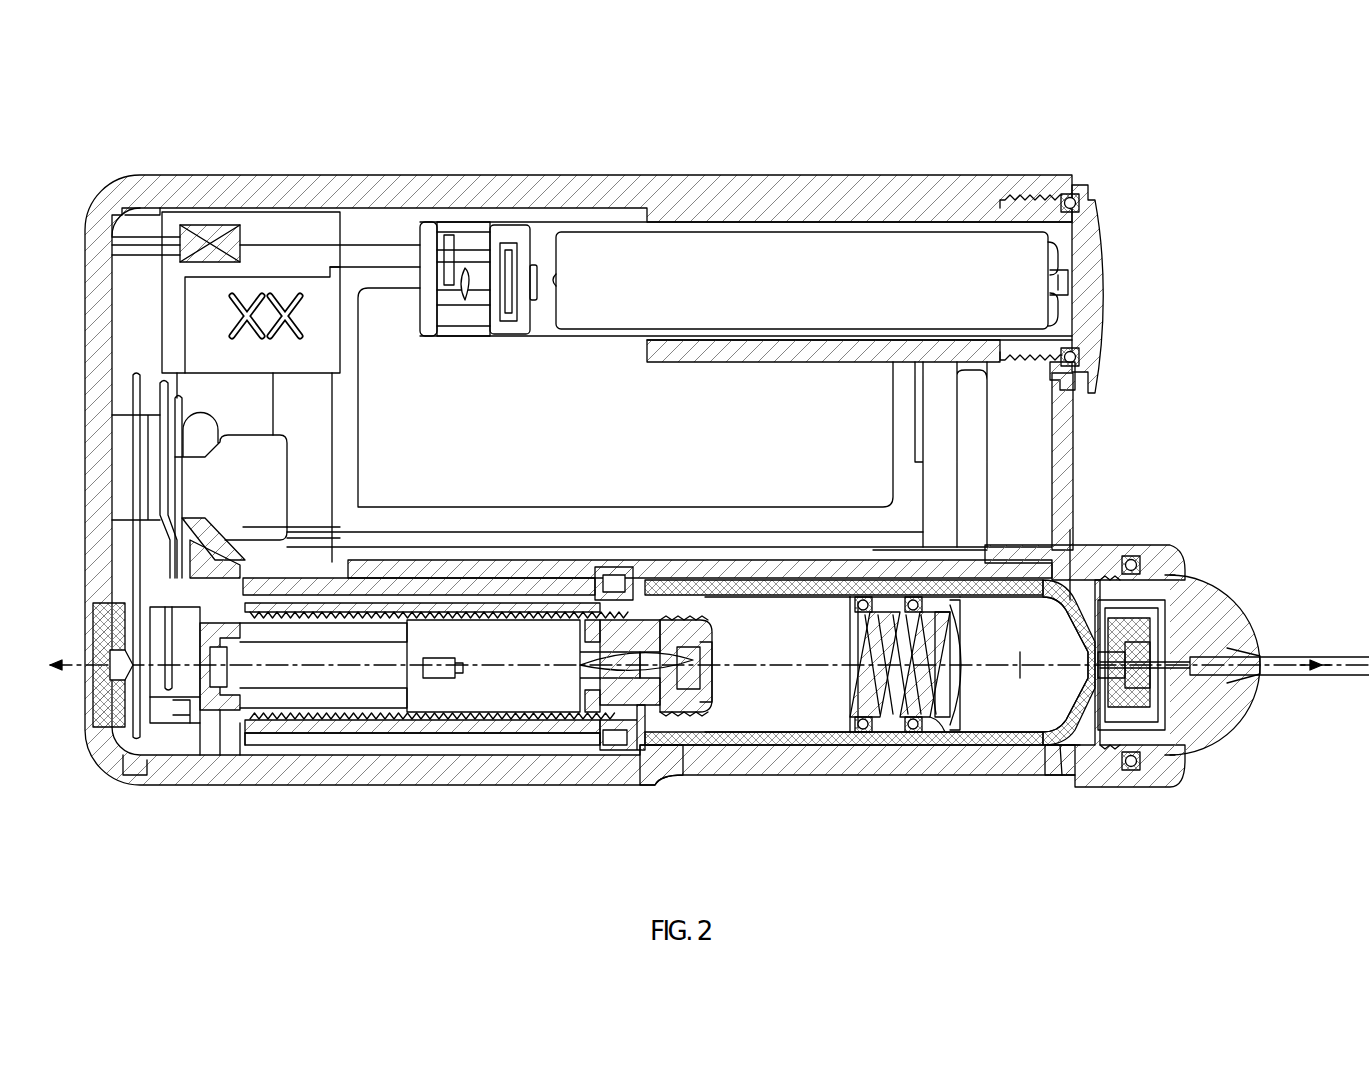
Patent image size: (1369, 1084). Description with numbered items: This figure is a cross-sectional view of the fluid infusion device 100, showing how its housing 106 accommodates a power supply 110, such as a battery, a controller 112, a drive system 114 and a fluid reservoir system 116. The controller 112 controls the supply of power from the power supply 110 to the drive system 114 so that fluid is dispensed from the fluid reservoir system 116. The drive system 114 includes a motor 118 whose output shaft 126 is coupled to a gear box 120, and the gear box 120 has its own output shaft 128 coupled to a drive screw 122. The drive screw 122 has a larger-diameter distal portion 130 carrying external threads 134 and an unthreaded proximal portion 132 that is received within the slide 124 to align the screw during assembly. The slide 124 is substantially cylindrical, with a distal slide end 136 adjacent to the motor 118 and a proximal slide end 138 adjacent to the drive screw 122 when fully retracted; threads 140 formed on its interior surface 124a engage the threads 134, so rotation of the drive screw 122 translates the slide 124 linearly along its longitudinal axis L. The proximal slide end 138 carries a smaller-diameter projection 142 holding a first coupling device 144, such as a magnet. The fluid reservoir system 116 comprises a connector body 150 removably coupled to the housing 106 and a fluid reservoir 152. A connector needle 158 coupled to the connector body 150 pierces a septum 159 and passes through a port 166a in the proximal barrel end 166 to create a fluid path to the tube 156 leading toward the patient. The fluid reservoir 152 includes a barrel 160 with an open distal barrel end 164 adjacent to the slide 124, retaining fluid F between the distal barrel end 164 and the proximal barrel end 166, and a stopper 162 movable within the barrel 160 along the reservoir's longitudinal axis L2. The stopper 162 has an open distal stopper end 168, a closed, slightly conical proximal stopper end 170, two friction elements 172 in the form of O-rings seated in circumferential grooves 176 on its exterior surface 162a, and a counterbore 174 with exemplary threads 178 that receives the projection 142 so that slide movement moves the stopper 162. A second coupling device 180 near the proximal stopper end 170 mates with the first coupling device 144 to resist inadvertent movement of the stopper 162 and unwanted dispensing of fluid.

The fluid infusion device 100 is at (1222, 132).
The housing 106 is at (216, 172).
The power supply 110 is at (838, 240).
The controller 112 is at (378, 390).
The drive system 114 is at (308, 805).
The fluid reservoir system 116 is at (898, 828).
The motor 118 is at (272, 665).
The gear box 120 is at (575, 678).
The drive screw 122 is at (615, 712).
The slide 124 is at (720, 644).
The interior surface 124a is at (348, 733).
The output shaft 126 is at (440, 659).
The output shaft 128 is at (612, 654).
The distal portion 130 is at (590, 712).
The proximal portion 132 is at (640, 745).
The threads 134 is at (622, 580).
The distal slide end 136 is at (258, 745).
The proximal slide end 138 is at (700, 570).
The threads 140 is at (424, 745).
The projection 142 is at (712, 712).
The first coupling device 144 is at (712, 674).
The connector body 150 is at (1242, 752).
The fluid reservoir 152 is at (1105, 588).
The tube 156 is at (1316, 657).
The connector needle 158 is at (1200, 682).
The septum 159 is at (1138, 650).
The barrel 160 is at (1068, 750).
The stopper 162 is at (950, 712).
The exterior surface 162a is at (940, 733).
The distal barrel end 164 is at (670, 783).
The proximal barrel end 166 is at (1080, 760).
The port 166a is at (1108, 632).
The distal stopper end 168 is at (850, 735).
The proximal stopper end 170 is at (970, 600).
The friction element 172 is at (858, 600).
The counterbore 174 is at (818, 714).
The circumferential grooves 176 is at (863, 733).
The threads 178 is at (853, 666).
The second coupling device 180 is at (935, 632).
The longitudinal axis L is at (58, 662).
The longitudinal axis L2 is at (1290, 675).
The fluid F is at (1020, 665).